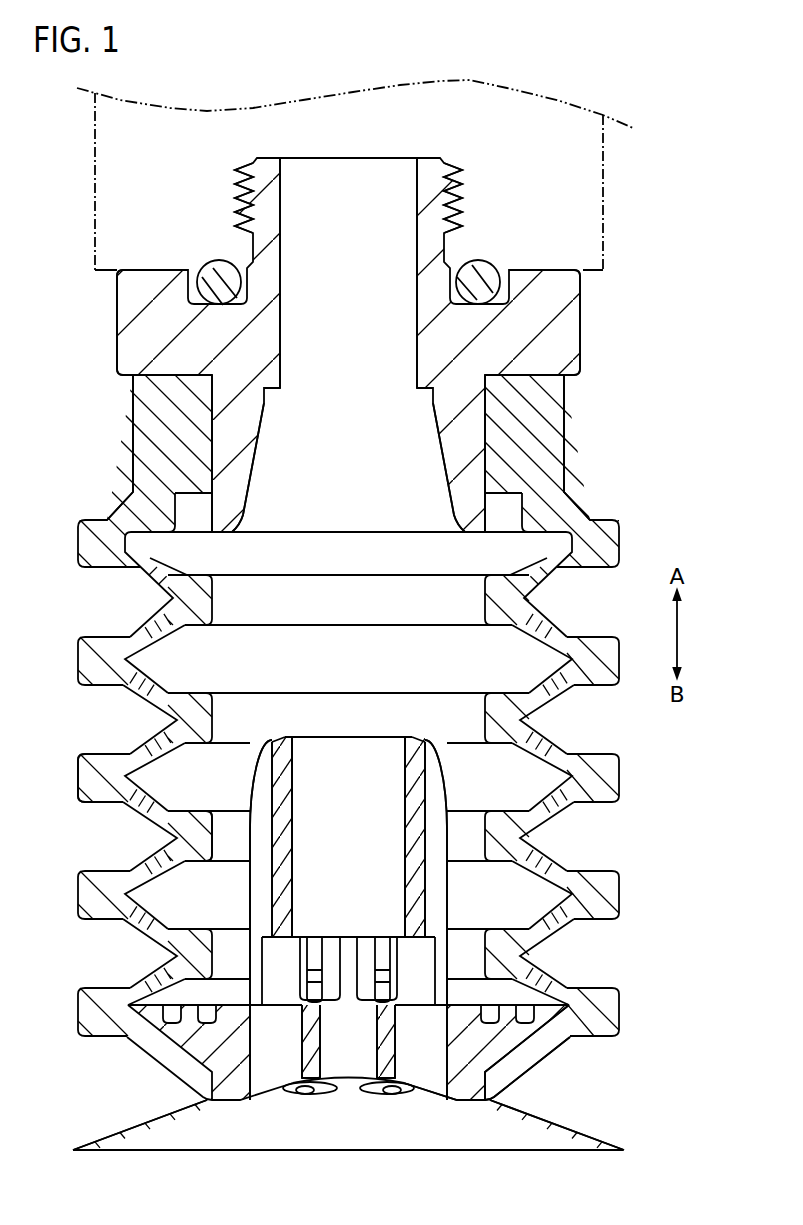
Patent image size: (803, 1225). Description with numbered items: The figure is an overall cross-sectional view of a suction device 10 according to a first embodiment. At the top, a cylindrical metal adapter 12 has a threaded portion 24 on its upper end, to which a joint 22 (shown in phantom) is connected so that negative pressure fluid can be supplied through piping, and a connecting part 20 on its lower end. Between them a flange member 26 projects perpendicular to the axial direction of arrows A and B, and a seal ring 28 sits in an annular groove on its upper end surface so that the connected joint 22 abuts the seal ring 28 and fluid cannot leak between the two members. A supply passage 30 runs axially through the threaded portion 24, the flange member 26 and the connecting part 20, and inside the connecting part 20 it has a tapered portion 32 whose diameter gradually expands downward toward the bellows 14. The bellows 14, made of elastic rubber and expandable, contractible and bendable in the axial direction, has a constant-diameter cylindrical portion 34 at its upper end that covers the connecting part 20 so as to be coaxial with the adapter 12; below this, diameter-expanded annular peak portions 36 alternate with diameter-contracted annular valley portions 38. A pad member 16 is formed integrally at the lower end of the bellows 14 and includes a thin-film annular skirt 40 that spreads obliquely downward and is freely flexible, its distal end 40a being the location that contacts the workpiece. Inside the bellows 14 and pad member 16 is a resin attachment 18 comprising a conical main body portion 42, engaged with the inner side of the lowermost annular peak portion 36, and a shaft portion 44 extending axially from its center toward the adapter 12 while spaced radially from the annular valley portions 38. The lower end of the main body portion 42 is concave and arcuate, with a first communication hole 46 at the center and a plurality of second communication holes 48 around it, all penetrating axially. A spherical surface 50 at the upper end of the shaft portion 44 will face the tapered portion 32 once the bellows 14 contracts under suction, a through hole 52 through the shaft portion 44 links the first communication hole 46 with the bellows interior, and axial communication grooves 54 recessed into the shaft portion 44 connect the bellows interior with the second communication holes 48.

The suction device 10 is at (344, 65).
The adapter 12 is at (590, 327).
The bellows 14 is at (72, 634).
The pad member 16 is at (582, 1119).
The attachment 18 is at (385, 735).
The connecting part 20 is at (457, 444).
The joint 22 is at (108, 148).
The threaded portion 24 is at (458, 195).
The flange member 26 is at (133, 342).
The seal ring 28 is at (223, 262).
The supply passage 30 is at (347, 177).
The tapered portion 32 is at (257, 466).
The cylindrical portion 34 is at (153, 447).
The annular peak portion 36 is at (85, 780).
The annular valley portion 38 is at (180, 837).
The skirt 40 is at (125, 1123).
The lip tip (suction surface) 40a is at (150, 1127).
The main body portion 42 is at (545, 1015).
The shaft portion 44 is at (288, 752).
The first communication hole 46 is at (353, 1067).
The second communication hole 48 is at (420, 1067).
The spherical surface 50 is at (433, 763).
The through hole 52 is at (348, 755).
The communication groove 54 is at (437, 897).